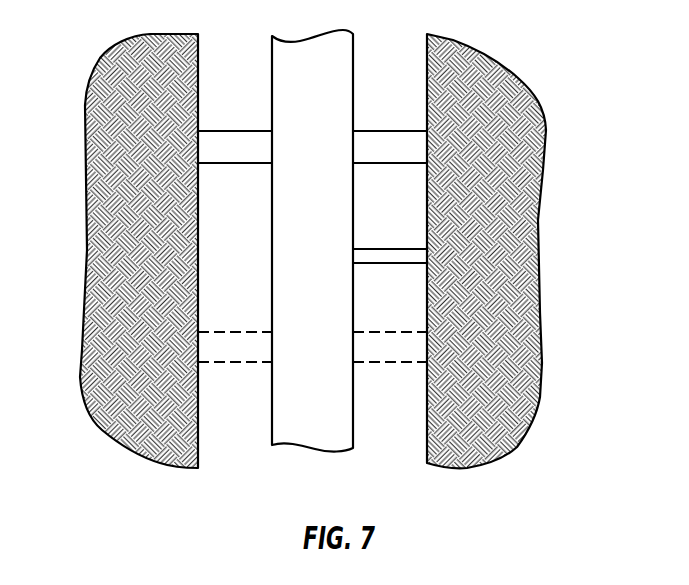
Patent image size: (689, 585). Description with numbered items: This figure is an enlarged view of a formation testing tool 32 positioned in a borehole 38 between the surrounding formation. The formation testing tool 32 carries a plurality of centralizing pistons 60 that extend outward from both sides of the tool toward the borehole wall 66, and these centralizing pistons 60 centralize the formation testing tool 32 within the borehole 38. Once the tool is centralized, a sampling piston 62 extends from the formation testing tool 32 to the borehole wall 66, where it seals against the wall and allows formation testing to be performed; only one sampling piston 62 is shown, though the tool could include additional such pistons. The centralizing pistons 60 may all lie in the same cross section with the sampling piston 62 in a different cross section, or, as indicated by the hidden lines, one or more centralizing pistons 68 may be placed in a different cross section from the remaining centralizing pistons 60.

The formation testing tool 32 is at (327, 116).
The borehole 38 is at (400, 462).
The centralizing pistons 60 is at (215, 141).
The sampling piston 62 is at (412, 259).
The borehole wall 66 is at (198, 443).
The centralizing pistons 68 is at (215, 347).